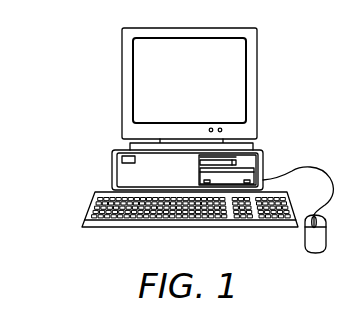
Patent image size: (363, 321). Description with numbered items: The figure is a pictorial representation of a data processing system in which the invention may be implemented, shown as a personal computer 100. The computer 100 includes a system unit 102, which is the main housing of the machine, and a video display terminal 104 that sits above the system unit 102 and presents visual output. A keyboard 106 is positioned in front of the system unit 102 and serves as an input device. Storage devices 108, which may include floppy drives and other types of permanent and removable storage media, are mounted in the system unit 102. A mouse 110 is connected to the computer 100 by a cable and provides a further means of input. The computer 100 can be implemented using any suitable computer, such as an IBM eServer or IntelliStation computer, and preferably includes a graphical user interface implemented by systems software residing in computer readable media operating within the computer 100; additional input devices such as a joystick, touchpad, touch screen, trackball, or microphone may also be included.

The computer 100 is at (61, 69).
The system unit 102 is at (112, 165).
The video display terminal 104 is at (257, 83).
The keyboard 106 is at (112, 230).
The storage devices 108 is at (242, 159).
The mouse 110 is at (314, 254).